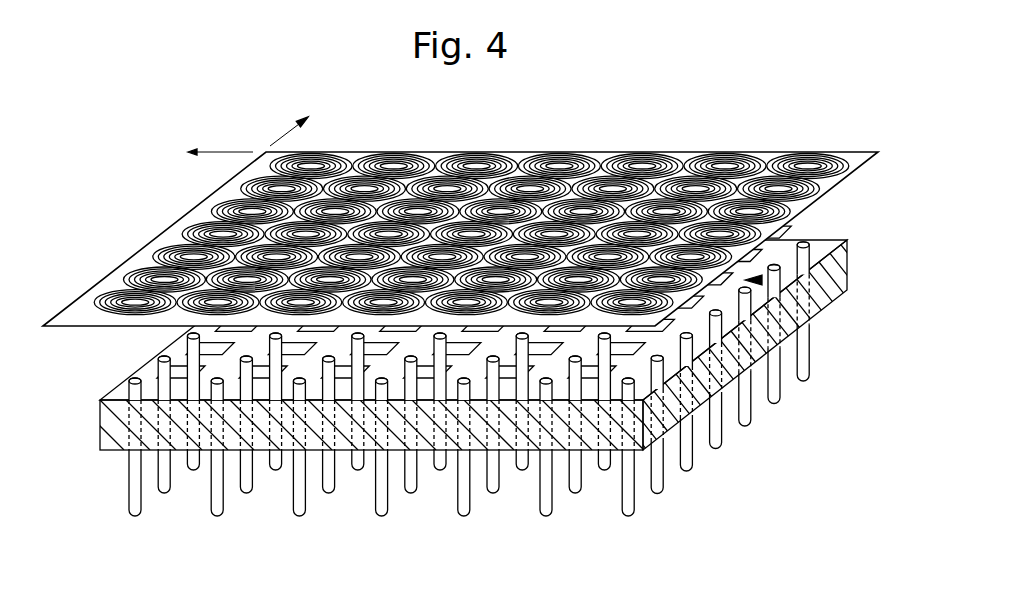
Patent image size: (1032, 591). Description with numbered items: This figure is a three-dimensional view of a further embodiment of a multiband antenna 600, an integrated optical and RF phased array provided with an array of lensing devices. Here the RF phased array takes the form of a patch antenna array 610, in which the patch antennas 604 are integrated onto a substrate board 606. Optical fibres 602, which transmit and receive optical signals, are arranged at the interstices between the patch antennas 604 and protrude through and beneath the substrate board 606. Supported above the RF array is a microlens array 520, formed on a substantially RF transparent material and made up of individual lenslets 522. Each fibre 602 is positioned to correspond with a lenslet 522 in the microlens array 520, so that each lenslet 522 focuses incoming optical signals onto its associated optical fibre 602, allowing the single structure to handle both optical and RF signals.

The multiband antenna 600 is at (473, 297).
The array of optical lenslets 520 is at (513, 151).
The lenslet 522 is at (197, 226).
The optical fibre 602 is at (133, 482).
The patch antenna 604 is at (430, 372).
The substrate board 606 is at (676, 399).
The patch antenna array 610 is at (762, 281).